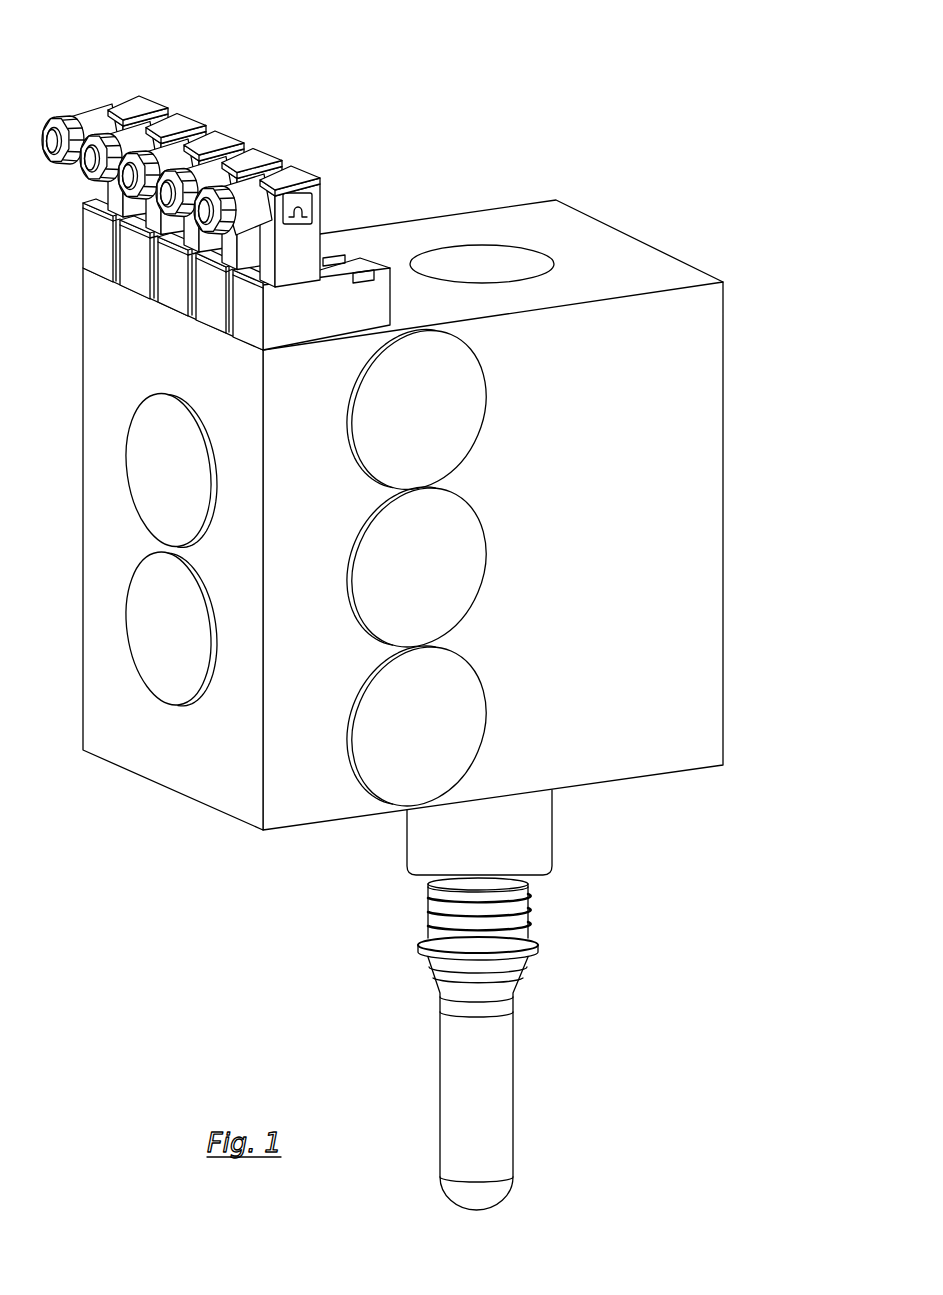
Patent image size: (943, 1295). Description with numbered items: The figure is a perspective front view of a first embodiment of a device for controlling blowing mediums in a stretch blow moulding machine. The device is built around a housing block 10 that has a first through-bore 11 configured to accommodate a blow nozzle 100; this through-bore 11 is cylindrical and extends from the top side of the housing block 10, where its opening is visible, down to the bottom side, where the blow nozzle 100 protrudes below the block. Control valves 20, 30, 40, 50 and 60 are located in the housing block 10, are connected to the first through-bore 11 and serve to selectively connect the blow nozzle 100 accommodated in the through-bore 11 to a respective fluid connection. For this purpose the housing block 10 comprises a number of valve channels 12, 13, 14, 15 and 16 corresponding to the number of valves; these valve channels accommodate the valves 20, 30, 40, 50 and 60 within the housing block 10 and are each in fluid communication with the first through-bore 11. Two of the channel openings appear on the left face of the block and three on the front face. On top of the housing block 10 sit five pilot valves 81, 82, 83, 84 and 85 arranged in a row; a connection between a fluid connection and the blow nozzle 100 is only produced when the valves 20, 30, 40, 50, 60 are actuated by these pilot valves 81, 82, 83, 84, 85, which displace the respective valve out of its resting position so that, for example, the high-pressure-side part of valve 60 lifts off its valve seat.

The housing block 10 is at (648, 207).
The first through-bore 11 is at (535, 252).
The valve channel 12 is at (205, 437).
The valve channel 13 is at (350, 563).
The valve channel 14 is at (202, 688).
The valve channel 15 is at (350, 765).
The valve channel 16 is at (458, 348).
The control valve 20 is at (160, 458).
The control valve 30 is at (388, 558).
The control valve 40 is at (165, 648).
The control valve 50 is at (415, 735).
The control valve 60 is at (397, 395).
The pilot valve 81 is at (138, 108).
The pilot valve 82 is at (176, 125).
The pilot valve 83 is at (214, 143).
The pilot valve 84 is at (252, 160).
The pilot valve 85 is at (290, 178).
The blow nozzle 100 is at (587, 850).